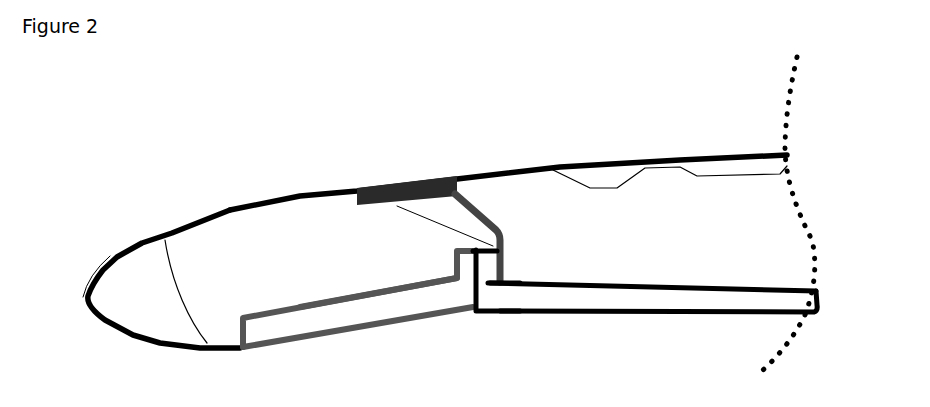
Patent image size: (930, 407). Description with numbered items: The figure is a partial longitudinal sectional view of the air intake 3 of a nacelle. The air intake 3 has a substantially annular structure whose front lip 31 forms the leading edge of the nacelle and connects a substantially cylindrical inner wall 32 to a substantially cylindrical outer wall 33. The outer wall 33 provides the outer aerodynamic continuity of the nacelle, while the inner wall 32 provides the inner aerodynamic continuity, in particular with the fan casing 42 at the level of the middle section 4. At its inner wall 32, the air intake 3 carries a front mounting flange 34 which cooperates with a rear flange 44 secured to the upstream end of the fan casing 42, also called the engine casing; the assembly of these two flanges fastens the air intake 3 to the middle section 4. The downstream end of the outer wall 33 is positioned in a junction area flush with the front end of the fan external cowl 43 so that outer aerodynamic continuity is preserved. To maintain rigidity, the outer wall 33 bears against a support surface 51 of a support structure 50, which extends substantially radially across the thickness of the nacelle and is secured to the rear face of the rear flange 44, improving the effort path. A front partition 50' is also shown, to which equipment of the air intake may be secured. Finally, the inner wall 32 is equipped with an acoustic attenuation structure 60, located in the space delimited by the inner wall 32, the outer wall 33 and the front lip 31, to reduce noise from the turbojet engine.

The air intake 3 is at (231, 201).
The front lip 31 is at (88, 318).
The outer wall 33 is at (302, 195).
The support surface 51 is at (427, 177).
The support structure 50 is at (458, 212).
The front partition 50' is at (164, 316).
The fan external cowl 43 is at (615, 161).
The middle section 4 is at (714, 145).
The inner wall 32 is at (277, 351).
The front mounting flange 34 is at (455, 264).
The acoustic attenuation structure 60 is at (347, 318).
The rear flange 44 is at (504, 264).
The fan casing 42 is at (643, 314).